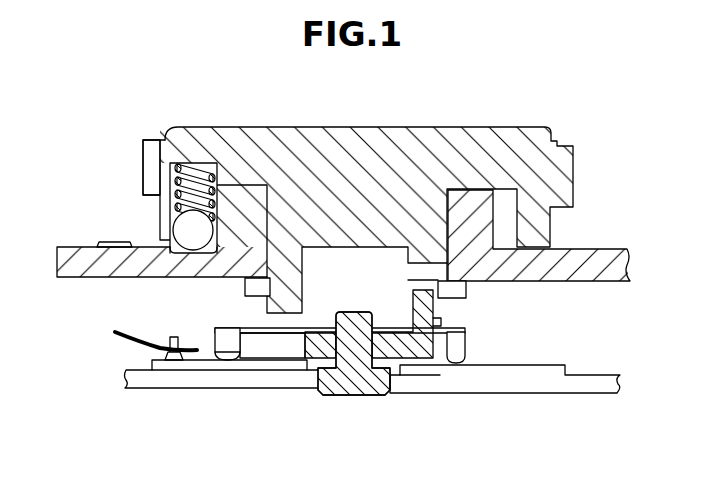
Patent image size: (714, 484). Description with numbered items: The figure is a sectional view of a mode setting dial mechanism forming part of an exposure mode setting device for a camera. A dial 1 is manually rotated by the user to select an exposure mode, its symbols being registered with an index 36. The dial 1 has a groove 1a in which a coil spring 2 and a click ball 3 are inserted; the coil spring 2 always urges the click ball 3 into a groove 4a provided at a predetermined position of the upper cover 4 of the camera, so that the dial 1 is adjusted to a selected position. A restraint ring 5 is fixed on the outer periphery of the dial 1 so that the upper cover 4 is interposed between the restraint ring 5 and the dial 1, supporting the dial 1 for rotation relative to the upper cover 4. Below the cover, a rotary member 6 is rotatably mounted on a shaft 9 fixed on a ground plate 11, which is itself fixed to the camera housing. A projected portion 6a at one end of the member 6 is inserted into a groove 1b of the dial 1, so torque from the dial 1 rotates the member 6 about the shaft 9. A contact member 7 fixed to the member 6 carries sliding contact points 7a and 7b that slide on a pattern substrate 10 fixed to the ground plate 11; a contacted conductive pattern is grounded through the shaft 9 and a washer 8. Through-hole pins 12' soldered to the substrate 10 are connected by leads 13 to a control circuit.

The dial 1 is at (373, 132).
The groove 1a is at (203, 165).
The groove 1b is at (415, 277).
The coil spring 2 is at (162, 170).
The click ball 3 is at (180, 230).
The index 36 is at (108, 240).
The upper cover 4 is at (88, 267).
The groove 4a is at (188, 258).
The restraint ring 5 is at (250, 290).
The washer 8 is at (330, 327).
The rotary member 6 is at (403, 362).
The projected portion 6a is at (425, 320).
The leads 13 is at (113, 342).
The through-hole pins 12' is at (161, 386).
The contact member 7 is at (212, 381).
The sliding contact point 7a is at (233, 357).
The ground plate 11 is at (277, 378).
The shaft 9 is at (345, 378).
The sliding contact point 7b is at (457, 363).
The pattern substrate 10 is at (513, 375).